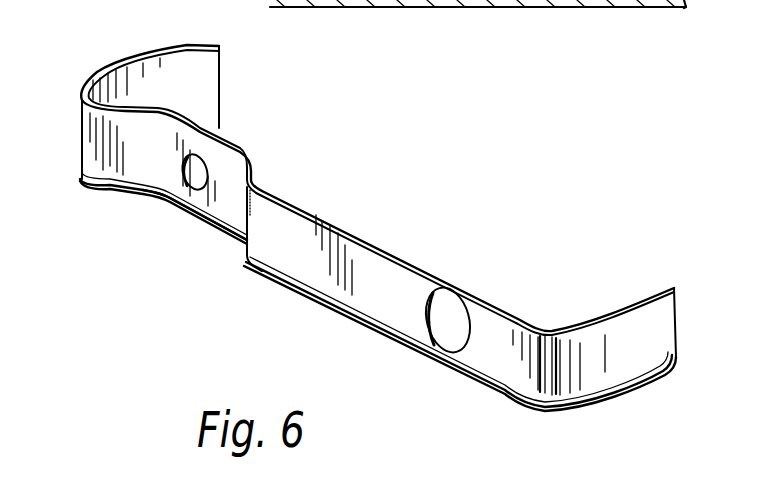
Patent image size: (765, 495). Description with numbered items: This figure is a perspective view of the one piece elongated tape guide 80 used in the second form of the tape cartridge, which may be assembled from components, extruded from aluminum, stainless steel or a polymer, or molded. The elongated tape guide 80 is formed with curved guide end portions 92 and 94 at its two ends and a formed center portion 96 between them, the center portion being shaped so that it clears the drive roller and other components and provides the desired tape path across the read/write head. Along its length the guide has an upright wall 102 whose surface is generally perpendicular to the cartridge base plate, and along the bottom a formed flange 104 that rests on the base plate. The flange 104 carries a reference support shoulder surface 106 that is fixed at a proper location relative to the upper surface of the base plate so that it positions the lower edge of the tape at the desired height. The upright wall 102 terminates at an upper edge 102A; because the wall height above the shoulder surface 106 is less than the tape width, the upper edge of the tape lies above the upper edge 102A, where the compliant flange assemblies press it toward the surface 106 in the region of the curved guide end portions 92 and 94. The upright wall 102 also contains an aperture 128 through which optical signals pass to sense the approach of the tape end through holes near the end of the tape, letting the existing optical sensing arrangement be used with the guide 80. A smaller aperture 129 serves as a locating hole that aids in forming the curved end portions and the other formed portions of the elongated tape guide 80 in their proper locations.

The elongated tape guide 80 is at (354, 211).
The curved guide end portion 92 is at (160, 44).
The curved guide end portion 94 is at (570, 327).
The formed center portion 96 is at (203, 226).
The upright wall 102 is at (387, 290).
The upper edge of the wall 102A is at (233, 143).
The formed flange 104 is at (82, 170).
The reference support shoulder surface 106 is at (80, 182).
The aperture 128 is at (457, 326).
The smaller aperture 129 is at (192, 181).